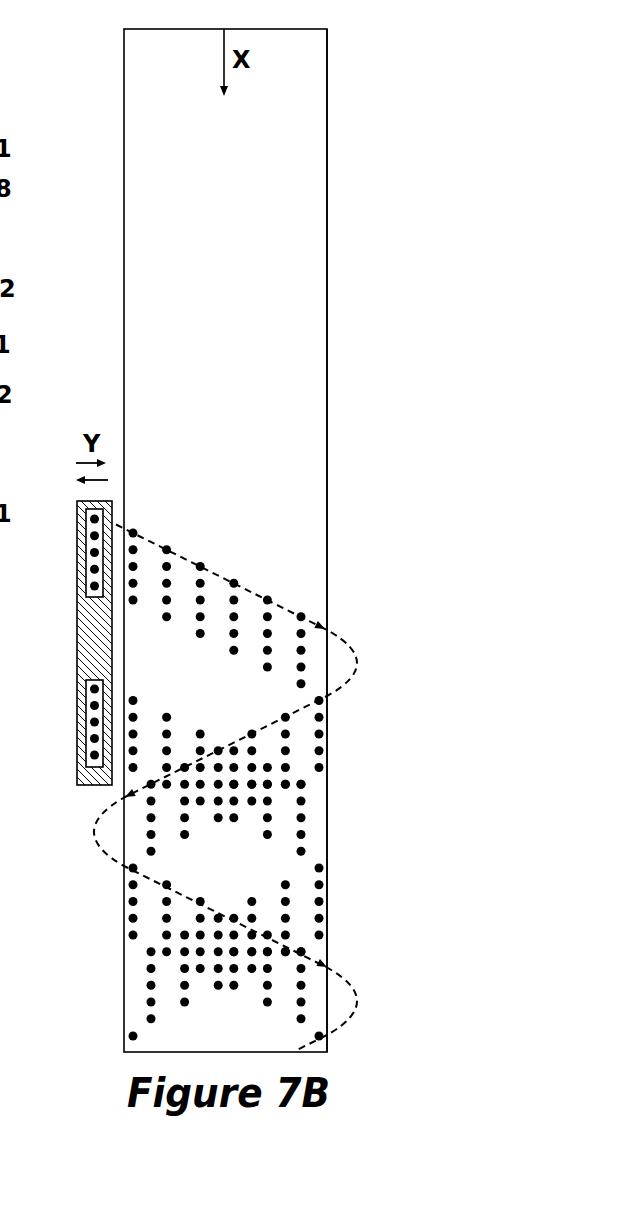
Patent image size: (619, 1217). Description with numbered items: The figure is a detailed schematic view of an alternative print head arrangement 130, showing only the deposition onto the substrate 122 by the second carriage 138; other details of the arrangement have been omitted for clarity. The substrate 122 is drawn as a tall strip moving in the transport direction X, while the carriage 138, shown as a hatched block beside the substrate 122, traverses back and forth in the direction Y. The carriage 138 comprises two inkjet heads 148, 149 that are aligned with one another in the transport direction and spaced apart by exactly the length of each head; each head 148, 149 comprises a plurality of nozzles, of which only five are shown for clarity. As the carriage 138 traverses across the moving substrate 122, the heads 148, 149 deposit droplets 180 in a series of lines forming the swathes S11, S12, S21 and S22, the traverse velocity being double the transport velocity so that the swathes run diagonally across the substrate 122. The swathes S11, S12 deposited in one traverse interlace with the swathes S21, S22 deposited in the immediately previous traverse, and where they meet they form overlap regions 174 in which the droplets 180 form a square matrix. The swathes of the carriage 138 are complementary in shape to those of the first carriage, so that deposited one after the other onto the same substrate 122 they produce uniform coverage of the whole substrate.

The print head arrangement 130 is at (357, 106).
The substrate 122 is at (327, 251).
The second carriage 138 is at (77, 648).
The inkjet head 148 is at (77, 547).
The inkjet head 149 is at (77, 716).
The droplets 180 is at (302, 614).
The overlap regions 174 is at (240, 777).
The swathe S11 is at (303, 649).
The swathe S12 is at (312, 821).
The swathe S21 is at (325, 736).
The swathe S22 is at (325, 899).